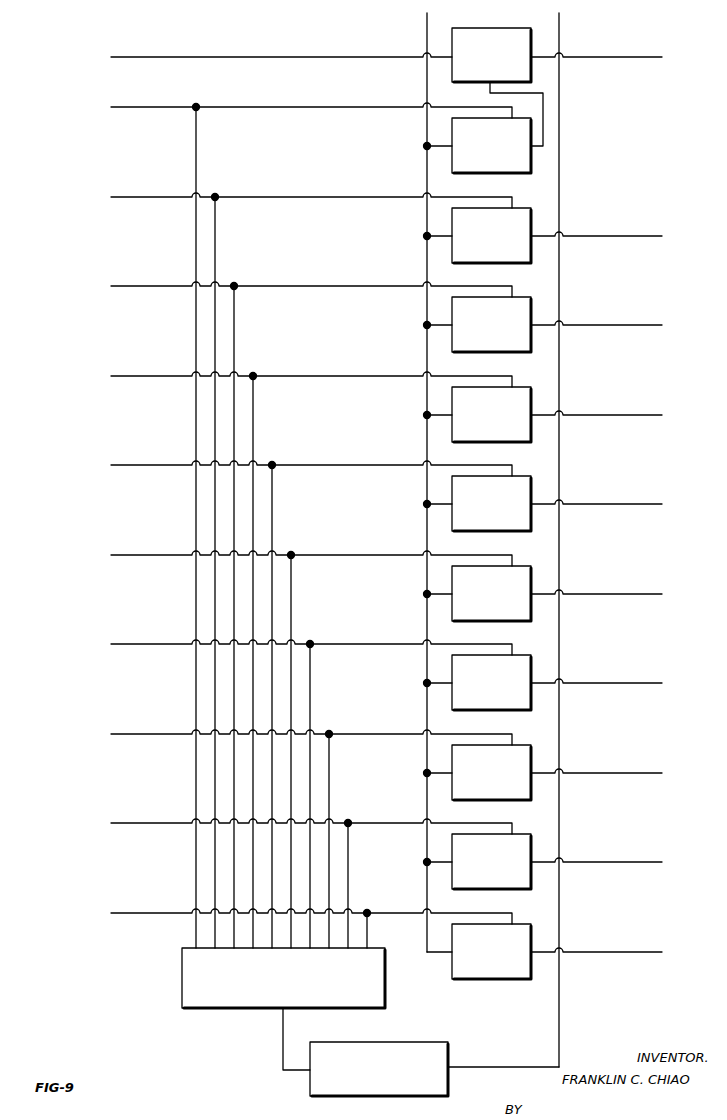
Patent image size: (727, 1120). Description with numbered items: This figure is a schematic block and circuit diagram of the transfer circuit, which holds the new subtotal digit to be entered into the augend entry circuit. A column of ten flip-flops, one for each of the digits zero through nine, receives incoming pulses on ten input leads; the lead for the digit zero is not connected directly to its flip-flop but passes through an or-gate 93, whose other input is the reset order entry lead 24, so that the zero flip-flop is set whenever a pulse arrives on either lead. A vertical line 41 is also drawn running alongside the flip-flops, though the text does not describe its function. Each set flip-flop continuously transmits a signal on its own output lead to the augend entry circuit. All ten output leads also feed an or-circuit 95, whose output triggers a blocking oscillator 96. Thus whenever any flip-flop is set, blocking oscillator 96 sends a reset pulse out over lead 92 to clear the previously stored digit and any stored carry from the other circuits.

The reset order entry lead 24 is at (125, 58).
The clock/strobe line 41 is at (427, 27).
The lead 92 is at (559, 36).
The or-gate 93 is at (502, 30).
The or-circuit 95 is at (182, 981).
The blocking oscillator 96 is at (313, 1093).